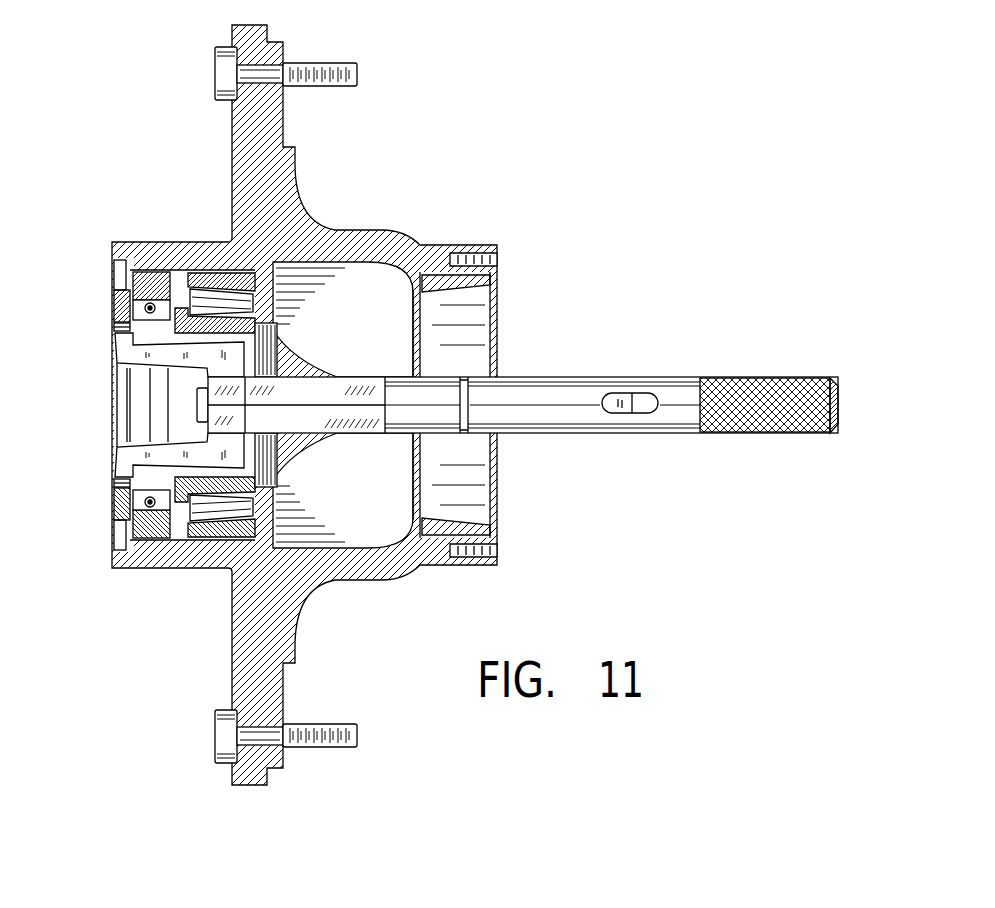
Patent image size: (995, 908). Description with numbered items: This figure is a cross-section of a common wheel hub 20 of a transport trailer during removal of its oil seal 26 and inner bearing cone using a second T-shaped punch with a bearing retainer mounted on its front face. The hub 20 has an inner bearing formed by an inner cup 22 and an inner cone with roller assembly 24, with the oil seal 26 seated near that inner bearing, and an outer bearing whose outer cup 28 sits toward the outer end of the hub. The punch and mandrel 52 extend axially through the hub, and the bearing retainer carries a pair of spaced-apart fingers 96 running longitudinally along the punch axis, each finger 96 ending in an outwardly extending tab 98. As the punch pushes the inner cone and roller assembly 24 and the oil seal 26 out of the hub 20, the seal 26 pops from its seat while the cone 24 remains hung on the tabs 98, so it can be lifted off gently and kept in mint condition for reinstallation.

The wheel hub 20 is at (392, 222).
The inner cup 22 is at (258, 515).
The inner cone with roller assembly 24 is at (283, 458).
The oil seal 26 is at (115, 300).
The outer cup 28 is at (415, 290).
The shaft 52 is at (572, 375).
The fingers 96 is at (137, 448).
The tab 98 is at (117, 352).